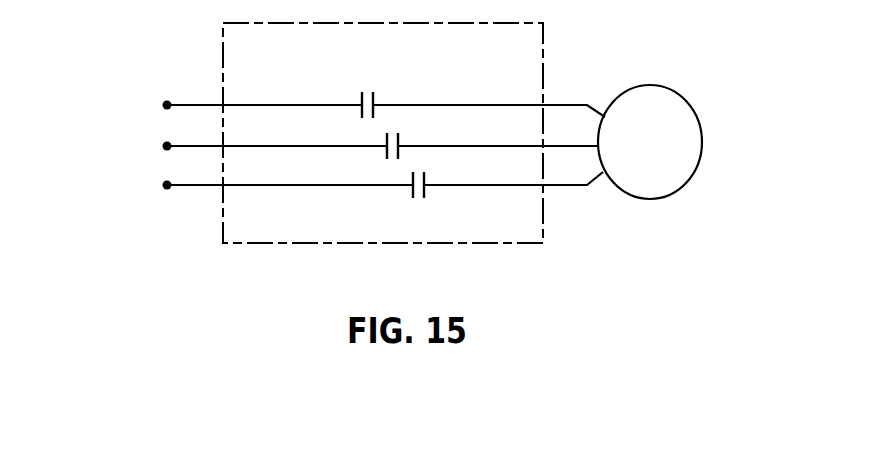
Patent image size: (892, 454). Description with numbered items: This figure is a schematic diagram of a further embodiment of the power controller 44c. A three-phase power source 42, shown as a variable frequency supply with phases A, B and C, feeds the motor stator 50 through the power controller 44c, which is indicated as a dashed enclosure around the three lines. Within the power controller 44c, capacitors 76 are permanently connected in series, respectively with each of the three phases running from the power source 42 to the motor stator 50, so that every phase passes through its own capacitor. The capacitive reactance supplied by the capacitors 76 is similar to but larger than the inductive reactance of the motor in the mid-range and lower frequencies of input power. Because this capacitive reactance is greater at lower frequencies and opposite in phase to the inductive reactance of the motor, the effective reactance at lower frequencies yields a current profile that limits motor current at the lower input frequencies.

The power source 42 is at (108, 88).
The power controller 44c is at (543, 33).
The capacitors 76 is at (352, 111).
The motor stator 50 is at (650, 200).